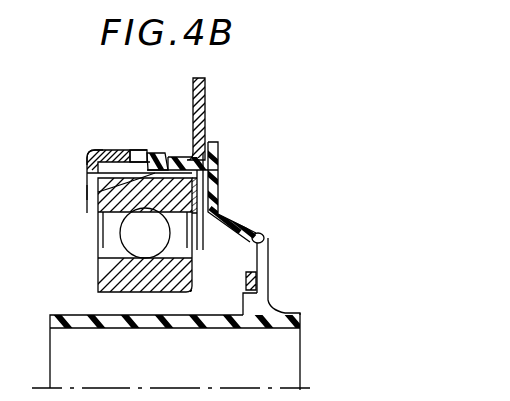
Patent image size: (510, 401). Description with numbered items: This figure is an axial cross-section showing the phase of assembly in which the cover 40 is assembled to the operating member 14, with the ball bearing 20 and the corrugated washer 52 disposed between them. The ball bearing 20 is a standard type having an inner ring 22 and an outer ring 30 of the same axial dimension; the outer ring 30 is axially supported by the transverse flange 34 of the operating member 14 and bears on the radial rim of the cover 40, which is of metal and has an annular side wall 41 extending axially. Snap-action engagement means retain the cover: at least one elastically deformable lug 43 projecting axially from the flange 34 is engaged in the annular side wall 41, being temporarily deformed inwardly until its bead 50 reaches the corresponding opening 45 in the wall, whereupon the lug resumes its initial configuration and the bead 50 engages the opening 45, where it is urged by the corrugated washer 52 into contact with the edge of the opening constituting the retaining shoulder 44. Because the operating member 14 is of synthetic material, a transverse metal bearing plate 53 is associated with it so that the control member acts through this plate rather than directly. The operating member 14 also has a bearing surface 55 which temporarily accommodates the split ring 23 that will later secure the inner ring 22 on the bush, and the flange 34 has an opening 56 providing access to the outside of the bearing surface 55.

The operating member 14 is at (302, 318).
The ball bearing 20 is at (118, 242).
The inner ring 22 is at (99, 262).
The outer ring 30 is at (142, 215).
The cover 40 is at (120, 150).
The annular side wall 41 is at (96, 149).
The elastically deformable lug 43 is at (99, 190).
The opening 45 is at (137, 150).
The bead 50 is at (152, 156).
The retaining shoulder 44 is at (161, 155).
The bearing plate 53 is at (206, 99).
The corrugated washer 52 is at (203, 200).
The transverse flange 34 is at (219, 172).
The opening 56 is at (264, 240).
The split ring 23 is at (253, 280).
The bearing surface 55 is at (247, 288).